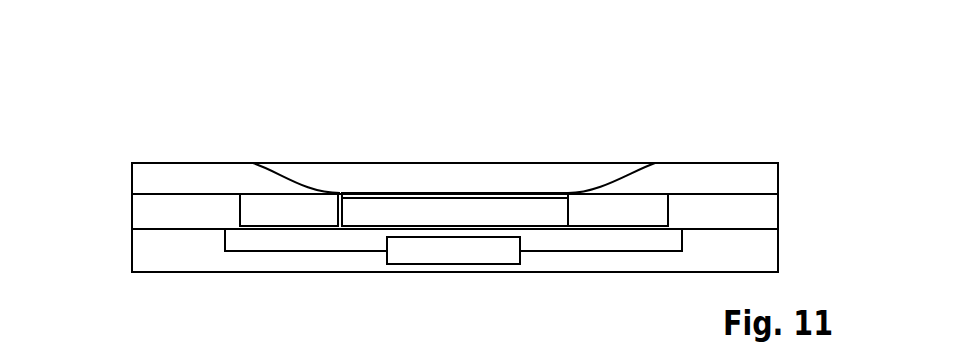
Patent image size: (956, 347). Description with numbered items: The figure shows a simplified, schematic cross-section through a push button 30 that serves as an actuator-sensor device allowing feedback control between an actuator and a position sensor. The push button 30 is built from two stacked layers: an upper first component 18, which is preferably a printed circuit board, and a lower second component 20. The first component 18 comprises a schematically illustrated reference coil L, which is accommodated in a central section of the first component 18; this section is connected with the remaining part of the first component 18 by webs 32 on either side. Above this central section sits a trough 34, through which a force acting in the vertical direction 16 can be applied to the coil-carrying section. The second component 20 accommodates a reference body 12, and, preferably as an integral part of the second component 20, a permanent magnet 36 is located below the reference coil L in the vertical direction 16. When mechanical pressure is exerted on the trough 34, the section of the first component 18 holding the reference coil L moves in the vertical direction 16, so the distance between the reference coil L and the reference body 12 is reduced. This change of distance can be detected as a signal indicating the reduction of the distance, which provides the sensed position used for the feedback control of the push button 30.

The reference body 12 is at (384, 237).
The vertical direction 16 is at (455, 133).
The first component 18 is at (762, 213).
The second component 20 is at (762, 253).
The push button 30 is at (712, 80).
The webs 32 is at (287, 224).
The trough 34 is at (508, 174).
The permanent magnet 36 is at (473, 254).
The reference coil L is at (411, 216).